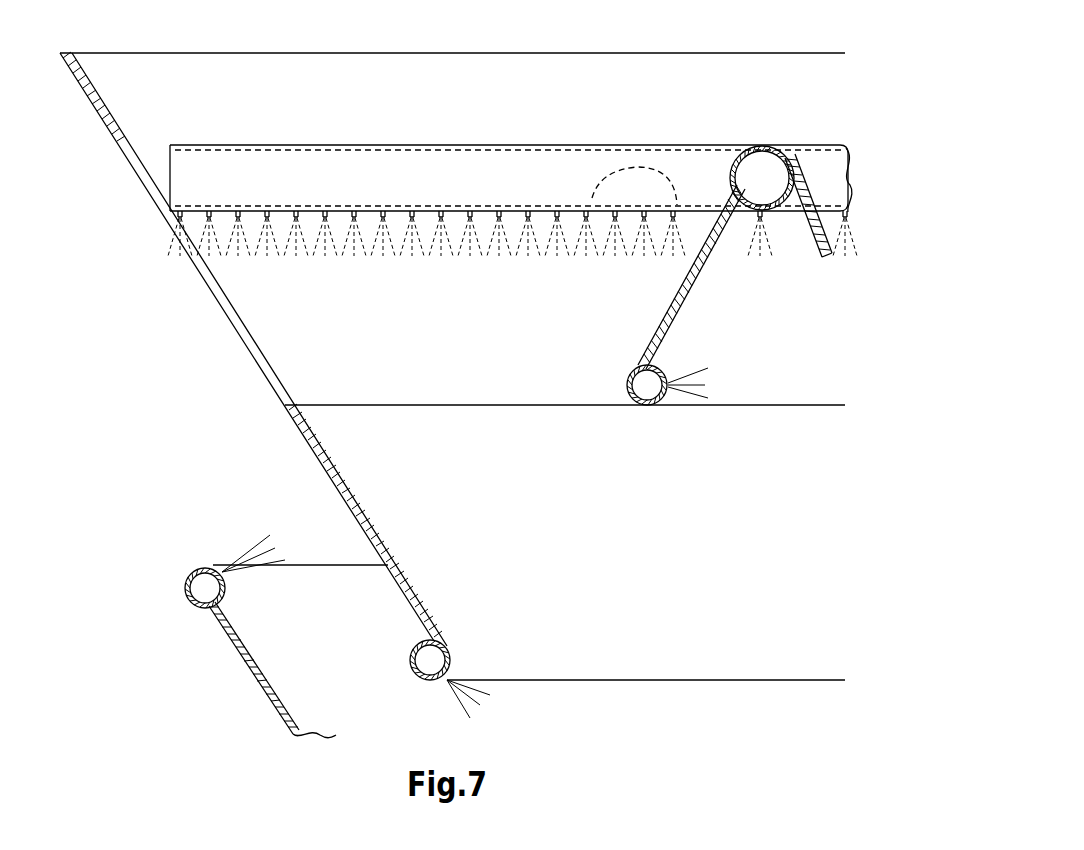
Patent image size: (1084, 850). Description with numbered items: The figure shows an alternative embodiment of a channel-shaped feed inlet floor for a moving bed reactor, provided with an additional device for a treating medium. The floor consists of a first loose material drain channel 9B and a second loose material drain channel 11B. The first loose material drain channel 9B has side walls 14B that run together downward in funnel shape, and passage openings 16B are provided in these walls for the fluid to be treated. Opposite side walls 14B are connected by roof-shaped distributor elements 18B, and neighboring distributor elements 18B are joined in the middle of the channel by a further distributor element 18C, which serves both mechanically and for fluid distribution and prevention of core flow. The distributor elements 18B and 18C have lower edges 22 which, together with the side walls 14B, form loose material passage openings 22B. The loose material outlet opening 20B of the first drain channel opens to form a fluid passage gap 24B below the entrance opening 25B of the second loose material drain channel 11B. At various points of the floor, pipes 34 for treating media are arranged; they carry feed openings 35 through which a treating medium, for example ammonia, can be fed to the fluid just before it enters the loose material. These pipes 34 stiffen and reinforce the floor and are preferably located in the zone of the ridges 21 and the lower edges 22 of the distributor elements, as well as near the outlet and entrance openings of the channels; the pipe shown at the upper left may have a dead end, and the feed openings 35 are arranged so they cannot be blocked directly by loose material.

The first loose material drain channel 9B is at (176, 266).
The passage openings 16B is at (230, 325).
The side walls 14B is at (320, 458).
The roof-shaped distributor elements 18B is at (511, 152).
The ridges 21 is at (412, 145).
The feed openings 35 is at (763, 208).
The pipes 34 is at (697, 162).
The distributor element 18C is at (656, 289).
The lower edges 22 is at (472, 405).
The loose material passage openings 22B is at (413, 395).
The entrance opening 25B is at (327, 565).
The fluid passage gap 24B is at (305, 642).
The second loose material drain channel 11B is at (205, 645).
The loose material outlet opening 20B is at (602, 680).